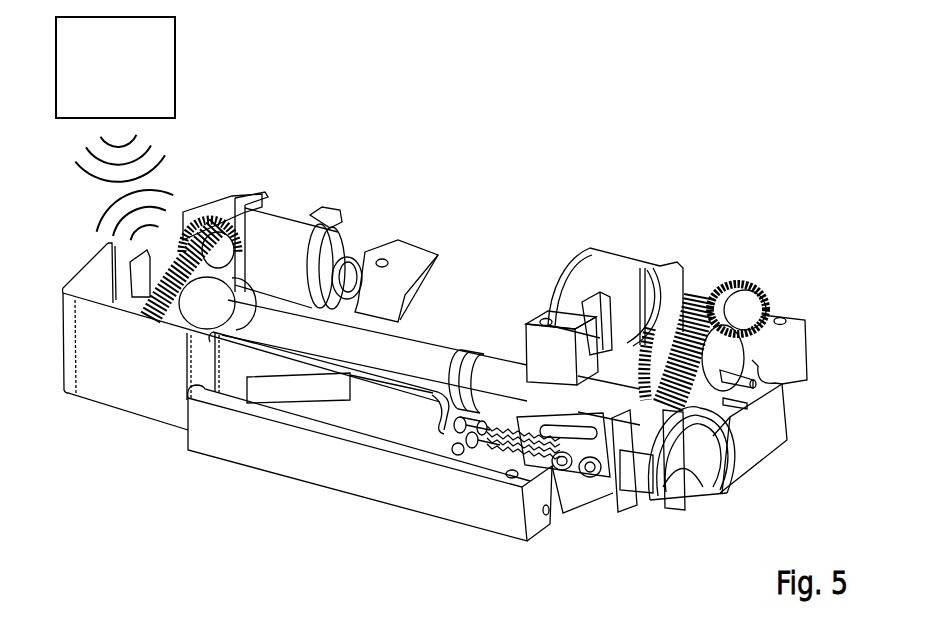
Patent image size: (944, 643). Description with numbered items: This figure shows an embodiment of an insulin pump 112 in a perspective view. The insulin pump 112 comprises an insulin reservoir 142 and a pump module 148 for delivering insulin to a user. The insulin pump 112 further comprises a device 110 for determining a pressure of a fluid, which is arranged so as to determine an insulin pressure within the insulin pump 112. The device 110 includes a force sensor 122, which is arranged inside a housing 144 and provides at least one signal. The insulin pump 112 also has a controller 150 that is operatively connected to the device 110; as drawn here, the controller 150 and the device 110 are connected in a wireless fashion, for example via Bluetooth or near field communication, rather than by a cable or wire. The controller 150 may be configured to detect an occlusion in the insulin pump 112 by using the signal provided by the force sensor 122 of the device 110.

The device for determining a pressure of a fluid 110 is at (198, 491).
The insulin pump 112 is at (575, 180).
The force sensor 122 is at (305, 485).
The insulin reservoir 142 is at (430, 337).
The housing 144 is at (370, 460).
The pump module 148 is at (745, 260).
The controller 150 is at (133, 77).